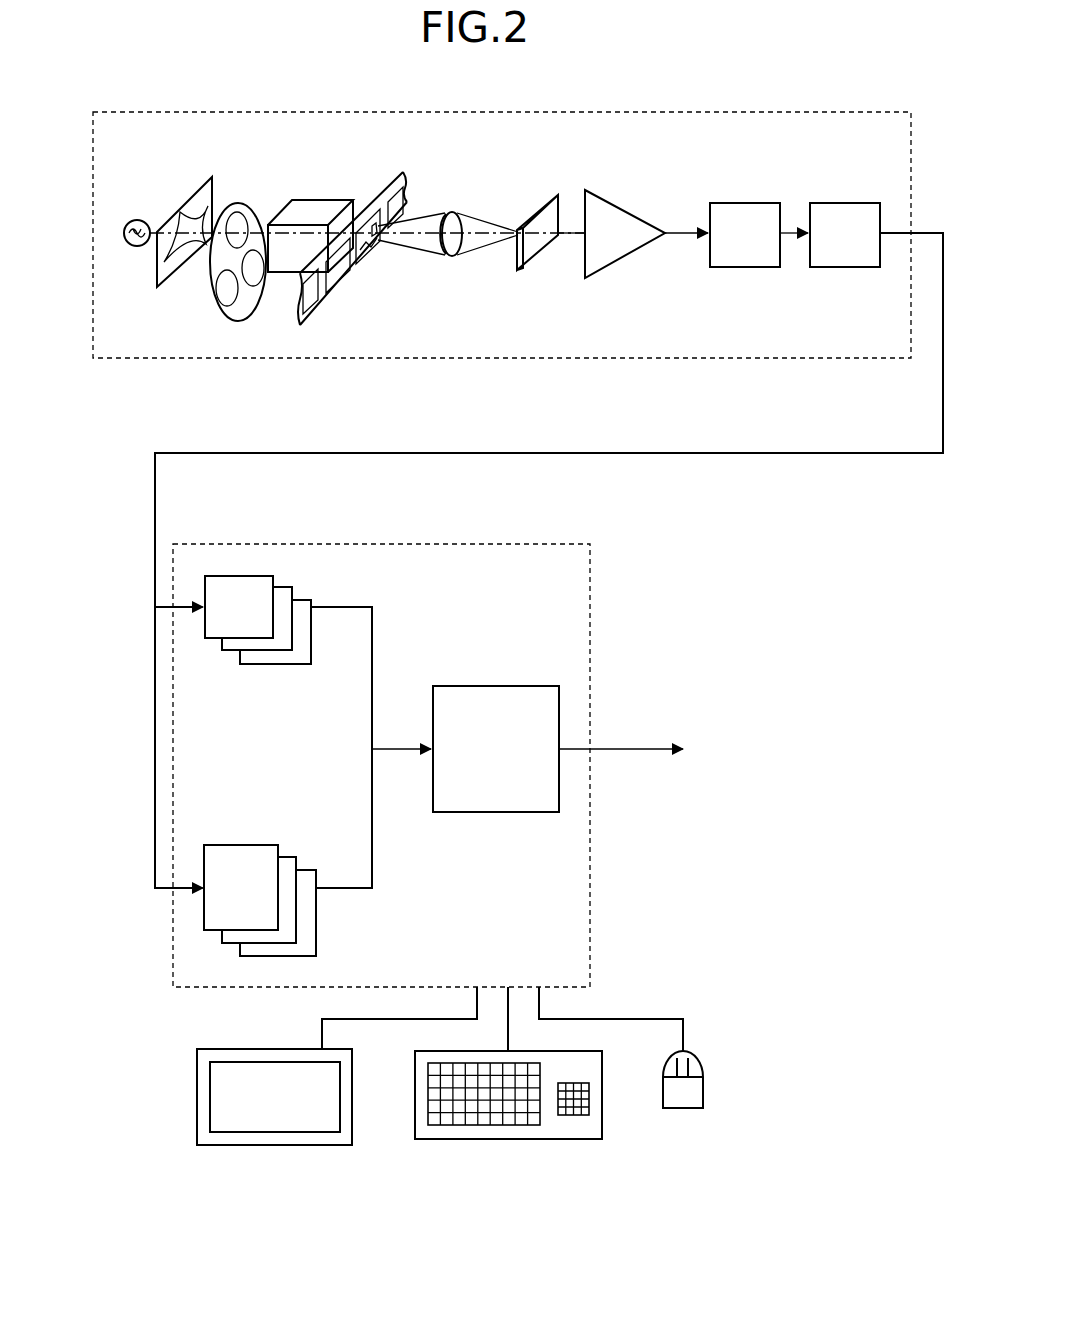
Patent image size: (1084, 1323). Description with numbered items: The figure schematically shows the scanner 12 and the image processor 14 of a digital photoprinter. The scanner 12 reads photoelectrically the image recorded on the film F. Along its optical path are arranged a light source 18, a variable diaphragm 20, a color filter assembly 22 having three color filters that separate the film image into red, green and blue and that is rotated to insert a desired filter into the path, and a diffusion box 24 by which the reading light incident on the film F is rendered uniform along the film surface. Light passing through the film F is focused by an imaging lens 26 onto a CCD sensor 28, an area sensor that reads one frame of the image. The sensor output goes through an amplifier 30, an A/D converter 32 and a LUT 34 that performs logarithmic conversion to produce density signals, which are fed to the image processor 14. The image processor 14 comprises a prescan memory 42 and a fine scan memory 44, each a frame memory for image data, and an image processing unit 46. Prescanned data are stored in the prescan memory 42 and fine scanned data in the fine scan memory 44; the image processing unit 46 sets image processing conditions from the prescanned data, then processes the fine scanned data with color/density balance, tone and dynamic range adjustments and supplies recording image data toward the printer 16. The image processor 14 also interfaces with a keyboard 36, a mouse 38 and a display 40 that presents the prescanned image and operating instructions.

The scanner 12 is at (318, 358).
The image processor 14 is at (592, 610).
The printer 16 is at (668, 750).
The light source 18 is at (139, 220).
The variable diaphragm 20 is at (190, 200).
The color filter assembly 22 is at (237, 204).
The diffusion box 24 is at (312, 218).
The film F is at (375, 195).
The imaging lens 26 is at (453, 214).
The CCD sensor 28 is at (523, 228).
The amplifier 30 is at (625, 255).
The A/D converter 32 is at (745, 267).
The LUT 34 is at (848, 267).
The keyboard 36 is at (502, 1139).
The mouse 38 is at (683, 1108).
The display 40 is at (272, 1145).
The prescan memory 42 is at (275, 664).
The fine scan memory 44 is at (243, 854).
The image processing unit 46 is at (465, 749).